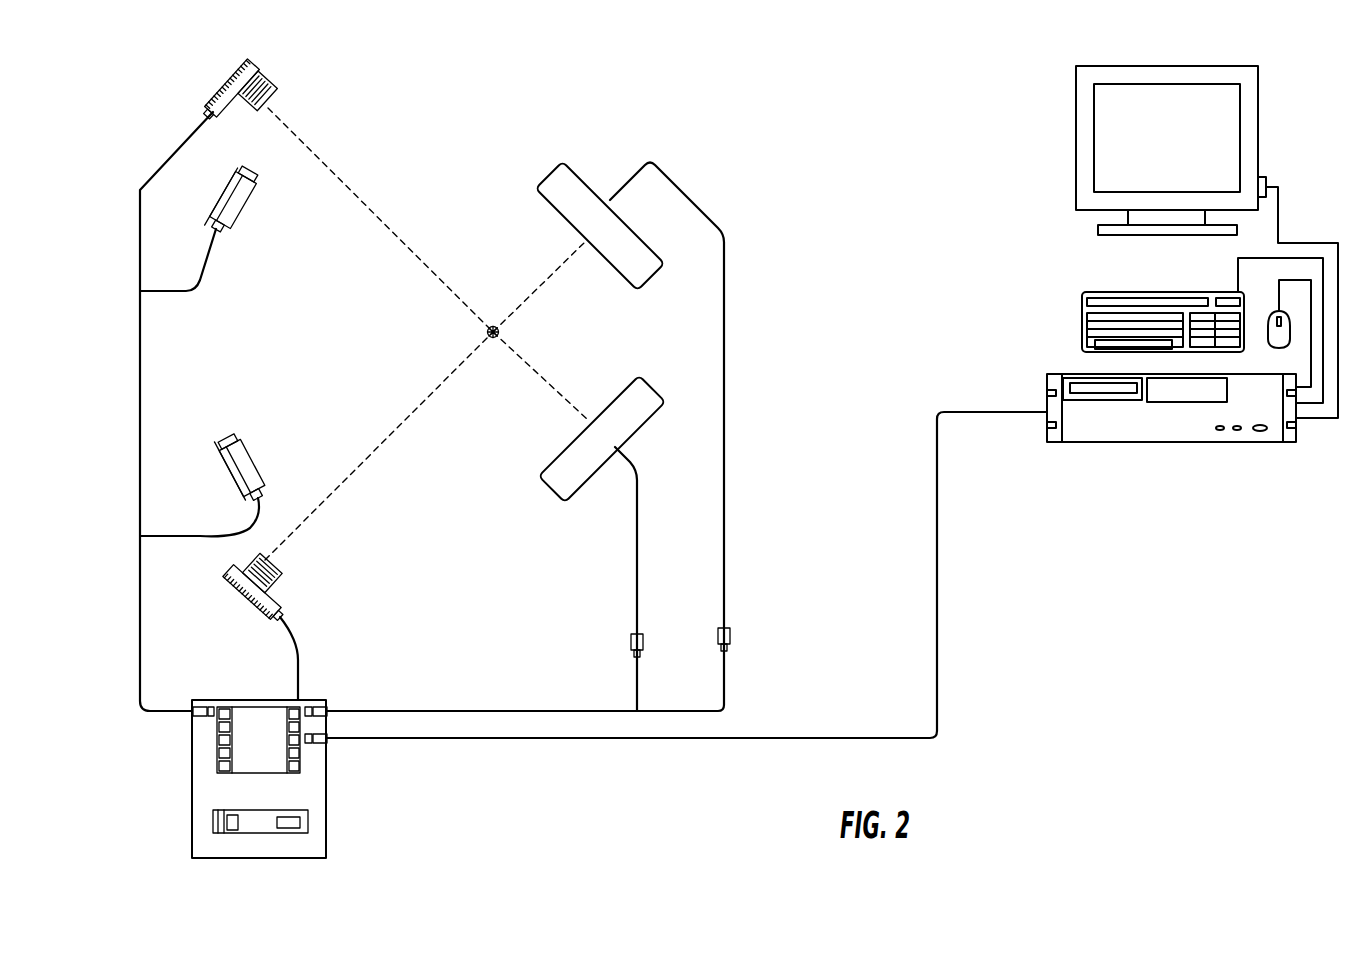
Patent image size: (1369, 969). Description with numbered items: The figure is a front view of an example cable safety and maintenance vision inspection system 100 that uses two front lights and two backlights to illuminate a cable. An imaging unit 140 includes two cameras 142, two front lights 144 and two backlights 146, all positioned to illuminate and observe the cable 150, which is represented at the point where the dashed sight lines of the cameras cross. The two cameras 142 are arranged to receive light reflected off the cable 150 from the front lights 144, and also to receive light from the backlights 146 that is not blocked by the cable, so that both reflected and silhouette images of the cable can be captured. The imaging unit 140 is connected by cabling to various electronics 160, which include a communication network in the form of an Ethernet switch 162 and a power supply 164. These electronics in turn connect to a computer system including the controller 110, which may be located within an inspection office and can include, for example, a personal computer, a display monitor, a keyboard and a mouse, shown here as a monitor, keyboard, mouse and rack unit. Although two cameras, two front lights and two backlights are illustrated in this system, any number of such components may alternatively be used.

The system 100 is at (872, 84).
The controller 110 is at (1302, 136).
The imaging unit 140 is at (634, 144).
The camera 142 is at (275, 100).
The front light 144 is at (537, 190).
The backlight 146 is at (248, 208).
The cable 150 is at (493, 327).
The electronics 160 is at (318, 778).
The Ethernet switch 162 is at (248, 754).
The power supply 164 is at (302, 820).